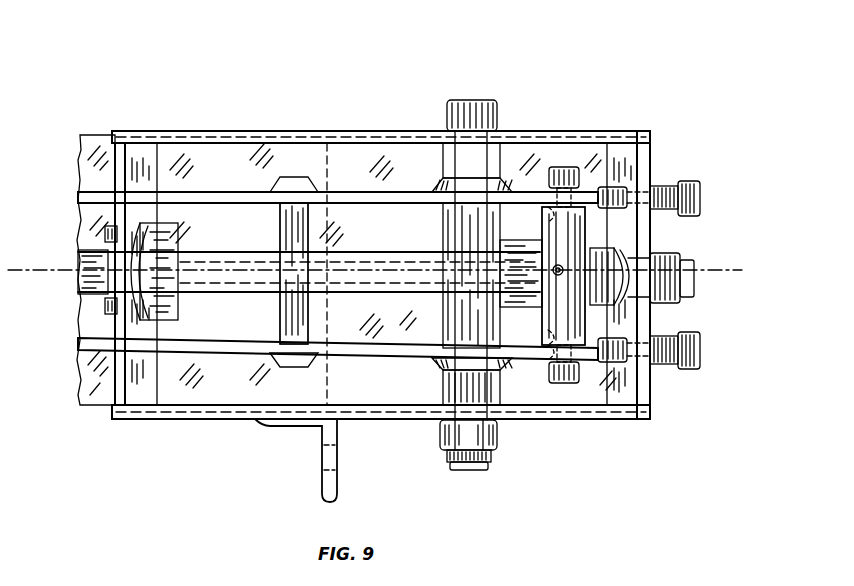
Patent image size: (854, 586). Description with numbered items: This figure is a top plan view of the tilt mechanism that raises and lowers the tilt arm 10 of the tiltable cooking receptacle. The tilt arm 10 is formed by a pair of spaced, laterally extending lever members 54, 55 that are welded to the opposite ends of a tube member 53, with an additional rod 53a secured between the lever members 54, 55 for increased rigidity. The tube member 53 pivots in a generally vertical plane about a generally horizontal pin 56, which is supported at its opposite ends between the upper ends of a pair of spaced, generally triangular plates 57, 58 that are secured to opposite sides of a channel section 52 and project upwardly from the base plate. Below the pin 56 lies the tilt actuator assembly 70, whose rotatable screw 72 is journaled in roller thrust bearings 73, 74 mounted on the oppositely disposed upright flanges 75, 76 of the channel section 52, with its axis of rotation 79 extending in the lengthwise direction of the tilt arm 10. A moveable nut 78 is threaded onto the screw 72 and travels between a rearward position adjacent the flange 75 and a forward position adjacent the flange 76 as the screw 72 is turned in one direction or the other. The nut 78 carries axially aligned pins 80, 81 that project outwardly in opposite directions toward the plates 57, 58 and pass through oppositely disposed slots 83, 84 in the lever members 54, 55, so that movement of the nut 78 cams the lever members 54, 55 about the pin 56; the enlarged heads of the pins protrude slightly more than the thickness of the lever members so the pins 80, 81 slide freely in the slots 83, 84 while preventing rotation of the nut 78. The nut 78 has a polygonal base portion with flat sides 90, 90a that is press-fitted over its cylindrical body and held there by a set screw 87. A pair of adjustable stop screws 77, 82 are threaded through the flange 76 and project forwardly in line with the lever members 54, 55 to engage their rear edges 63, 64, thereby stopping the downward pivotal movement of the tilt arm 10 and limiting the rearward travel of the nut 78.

The tilt arm 10 is at (232, 187).
The channel section 52 is at (201, 398).
The tube member 53 is at (443, 226).
The rod 53a is at (289, 226).
The lever member 54 is at (358, 192).
The lever member 55 is at (371, 350).
The pin 56 is at (477, 168).
The plate 57 is at (346, 132).
The plate 58 is at (398, 411).
The rear edge 63 is at (610, 187).
The rear edge 64 is at (612, 363).
The tilt actuator assembly 70 is at (588, 228).
The rotatable screw 72 is at (247, 284).
The roller thrust bearing 73 is at (165, 298).
The roller thrust bearing 74 is at (620, 290).
The flange 75 is at (116, 160).
The flange 76 is at (645, 156).
The adjustable stop screw 77 is at (694, 182).
The moveable nut 78 is at (511, 265).
The axis of rotation 79 is at (724, 268).
The pin 80 is at (565, 166).
The pin 81 is at (556, 385).
The adjustable stop screw 82 is at (687, 369).
The slot 83 is at (541, 225).
The slot 84 is at (543, 333).
The set screw 87 is at (553, 275).
The flat side 90 is at (556, 212).
The flat side 90a is at (551, 342).